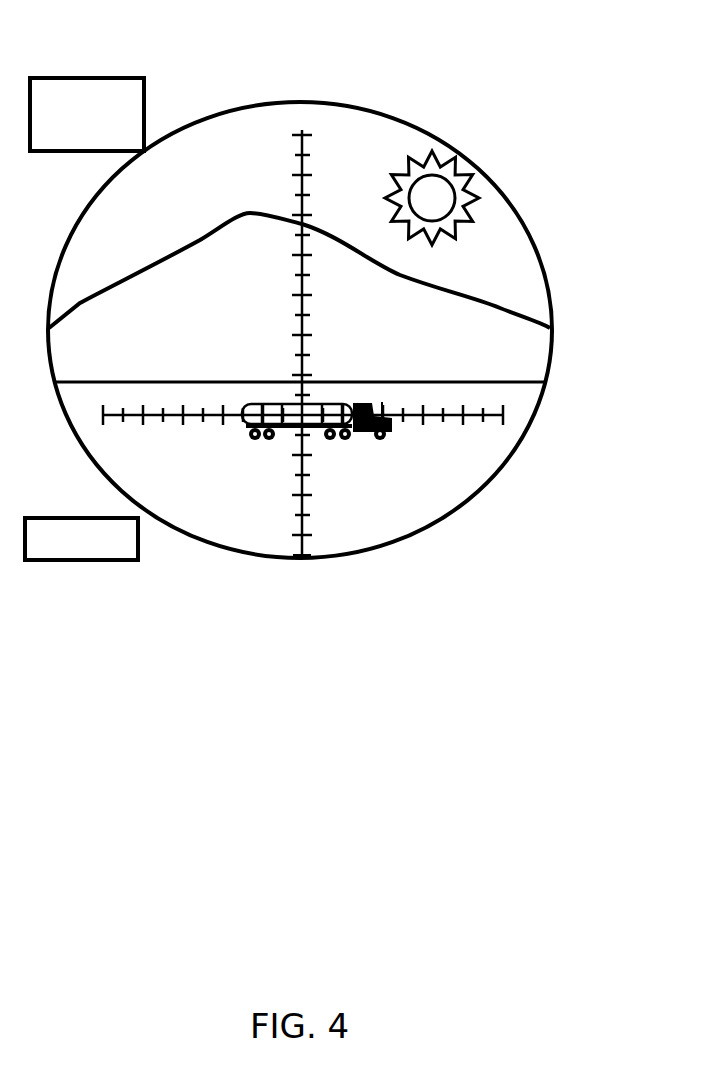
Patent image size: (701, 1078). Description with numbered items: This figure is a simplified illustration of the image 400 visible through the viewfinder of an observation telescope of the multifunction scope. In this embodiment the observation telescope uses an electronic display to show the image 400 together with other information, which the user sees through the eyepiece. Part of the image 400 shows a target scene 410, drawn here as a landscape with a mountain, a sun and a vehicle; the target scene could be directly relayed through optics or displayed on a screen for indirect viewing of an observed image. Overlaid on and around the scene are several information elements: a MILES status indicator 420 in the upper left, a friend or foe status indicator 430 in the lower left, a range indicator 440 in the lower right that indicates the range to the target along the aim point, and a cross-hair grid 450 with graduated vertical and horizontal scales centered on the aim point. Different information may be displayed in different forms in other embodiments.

The image 400 is at (574, 88).
The target scene 410 is at (212, 117).
The MILES status indicator 420 is at (60, 152).
The friend or foe status indicator 430 is at (98, 562).
The range indicator 440 is at (498, 570).
The cross-hair grid 450 is at (300, 130).